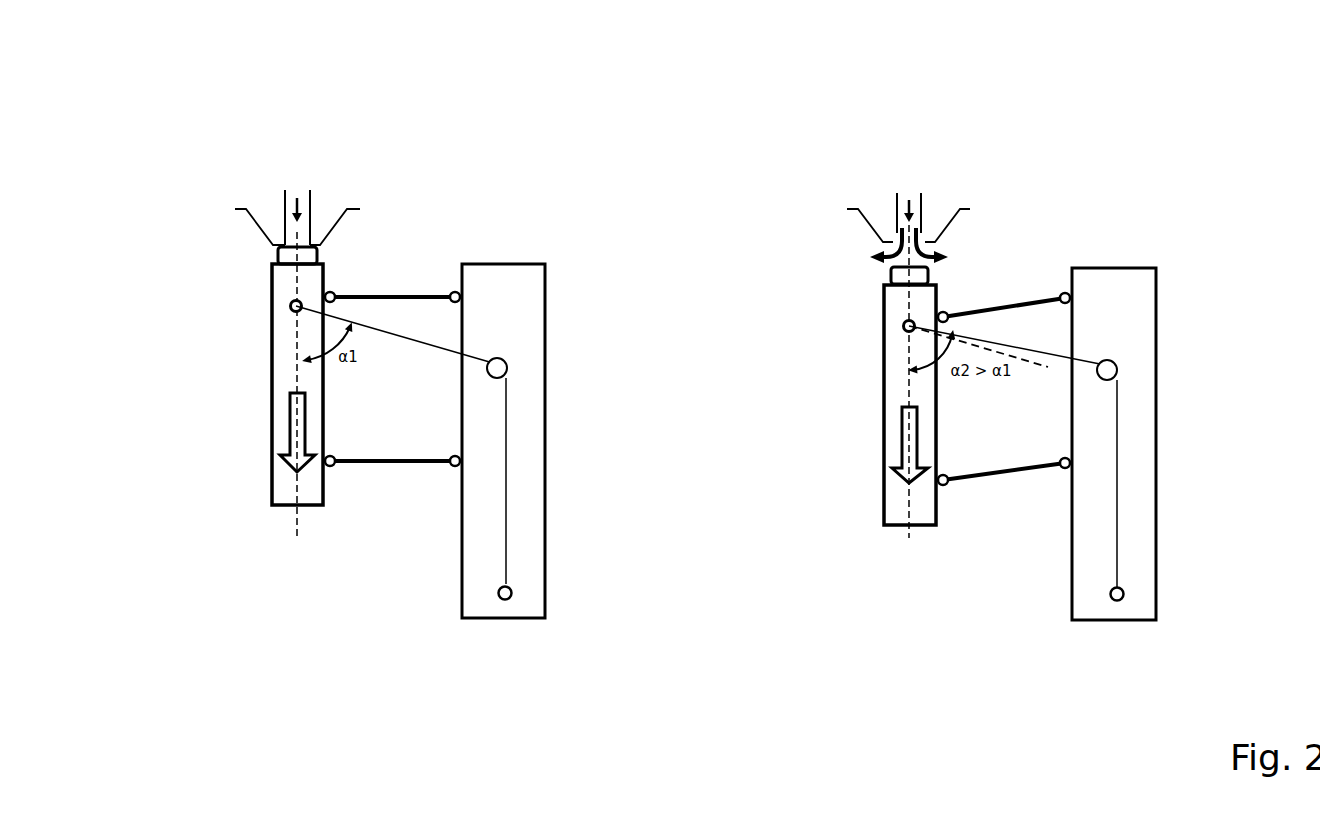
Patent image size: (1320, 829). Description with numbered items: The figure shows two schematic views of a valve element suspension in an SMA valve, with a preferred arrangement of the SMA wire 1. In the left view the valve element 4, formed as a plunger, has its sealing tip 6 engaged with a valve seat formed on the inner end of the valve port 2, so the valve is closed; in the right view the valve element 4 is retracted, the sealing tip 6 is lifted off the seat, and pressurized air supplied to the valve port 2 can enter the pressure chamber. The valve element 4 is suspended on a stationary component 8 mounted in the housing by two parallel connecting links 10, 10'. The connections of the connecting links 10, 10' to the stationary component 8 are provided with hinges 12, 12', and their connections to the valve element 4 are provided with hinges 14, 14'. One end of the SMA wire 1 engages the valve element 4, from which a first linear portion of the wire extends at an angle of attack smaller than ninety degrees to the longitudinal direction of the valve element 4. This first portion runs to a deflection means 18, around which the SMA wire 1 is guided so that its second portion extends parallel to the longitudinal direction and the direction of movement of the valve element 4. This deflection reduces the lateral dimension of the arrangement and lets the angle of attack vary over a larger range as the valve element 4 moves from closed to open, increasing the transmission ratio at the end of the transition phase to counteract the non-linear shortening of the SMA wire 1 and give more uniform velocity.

The SMA wire 1 is at (447, 342).
The valve port 2 is at (255, 223).
The valve element 4 is at (270, 403).
The sealing tip 6 is at (278, 256).
The stationary component 8 is at (542, 473).
The connecting link 10 is at (697, 218).
The connecting link 10' is at (697, 422).
The hinge 12 is at (670, 255).
The hinge 12' is at (664, 534).
The hinge 14 is at (742, 252).
The hinge 14' is at (725, 531).
The deflection means 18 is at (502, 360).